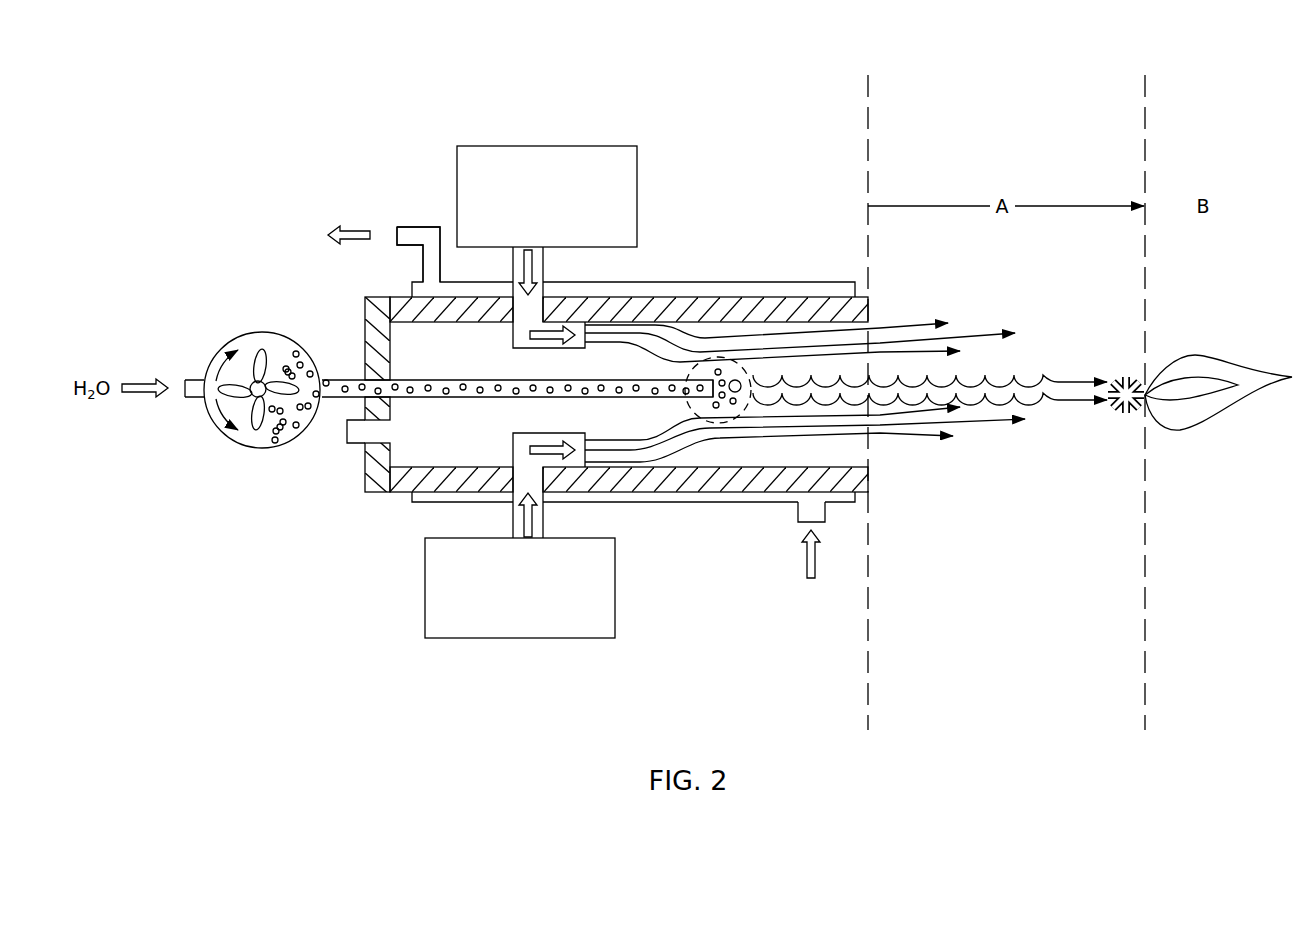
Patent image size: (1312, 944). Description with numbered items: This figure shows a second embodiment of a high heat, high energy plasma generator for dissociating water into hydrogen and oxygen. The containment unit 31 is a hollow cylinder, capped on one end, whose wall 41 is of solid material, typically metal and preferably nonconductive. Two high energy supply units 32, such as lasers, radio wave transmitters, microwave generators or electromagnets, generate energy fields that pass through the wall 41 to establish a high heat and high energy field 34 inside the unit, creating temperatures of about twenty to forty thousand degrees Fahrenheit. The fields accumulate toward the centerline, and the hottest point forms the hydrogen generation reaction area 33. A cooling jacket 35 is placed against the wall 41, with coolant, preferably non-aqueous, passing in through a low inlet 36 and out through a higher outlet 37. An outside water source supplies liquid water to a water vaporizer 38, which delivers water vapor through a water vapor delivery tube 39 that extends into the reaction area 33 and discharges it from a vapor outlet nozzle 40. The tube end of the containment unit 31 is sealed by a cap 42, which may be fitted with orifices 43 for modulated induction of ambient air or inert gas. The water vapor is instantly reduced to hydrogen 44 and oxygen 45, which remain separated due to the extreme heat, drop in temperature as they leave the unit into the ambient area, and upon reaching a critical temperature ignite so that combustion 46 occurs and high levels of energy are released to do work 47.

The containment unit 31 is at (704, 245).
The high energy supply unit 32 is at (457, 190).
The hydrogen generation reaction area 33 is at (687, 400).
The high heat and high energy field 34 is at (783, 355).
The cooling jacket 35 is at (437, 503).
The inlet 36 is at (797, 513).
The outlet 37 is at (355, 231).
The water vaporizer 38 is at (262, 448).
The water vapor delivery tube 39 is at (471, 379).
The vapor outlet nozzle 40 is at (720, 400).
The wall 41 is at (405, 288).
The cap 42 is at (365, 333).
The orifices 43 is at (353, 443).
The hydrogen 44 is at (1046, 476).
The oxygen 45 is at (930, 442).
The combustion 46 is at (1128, 378).
The work 47 is at (1215, 413).